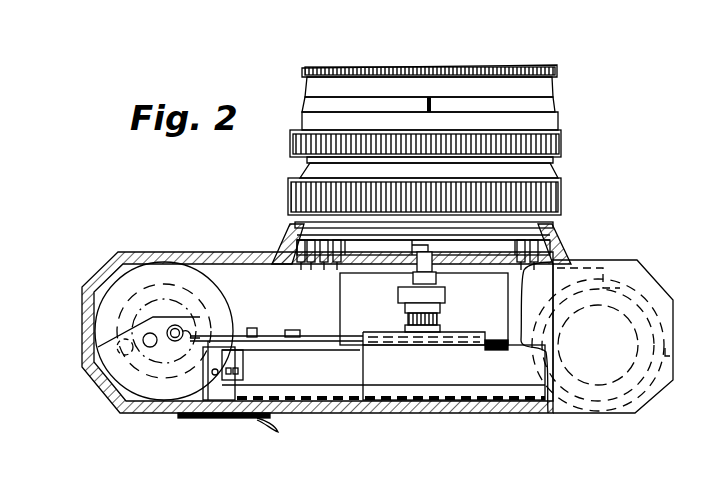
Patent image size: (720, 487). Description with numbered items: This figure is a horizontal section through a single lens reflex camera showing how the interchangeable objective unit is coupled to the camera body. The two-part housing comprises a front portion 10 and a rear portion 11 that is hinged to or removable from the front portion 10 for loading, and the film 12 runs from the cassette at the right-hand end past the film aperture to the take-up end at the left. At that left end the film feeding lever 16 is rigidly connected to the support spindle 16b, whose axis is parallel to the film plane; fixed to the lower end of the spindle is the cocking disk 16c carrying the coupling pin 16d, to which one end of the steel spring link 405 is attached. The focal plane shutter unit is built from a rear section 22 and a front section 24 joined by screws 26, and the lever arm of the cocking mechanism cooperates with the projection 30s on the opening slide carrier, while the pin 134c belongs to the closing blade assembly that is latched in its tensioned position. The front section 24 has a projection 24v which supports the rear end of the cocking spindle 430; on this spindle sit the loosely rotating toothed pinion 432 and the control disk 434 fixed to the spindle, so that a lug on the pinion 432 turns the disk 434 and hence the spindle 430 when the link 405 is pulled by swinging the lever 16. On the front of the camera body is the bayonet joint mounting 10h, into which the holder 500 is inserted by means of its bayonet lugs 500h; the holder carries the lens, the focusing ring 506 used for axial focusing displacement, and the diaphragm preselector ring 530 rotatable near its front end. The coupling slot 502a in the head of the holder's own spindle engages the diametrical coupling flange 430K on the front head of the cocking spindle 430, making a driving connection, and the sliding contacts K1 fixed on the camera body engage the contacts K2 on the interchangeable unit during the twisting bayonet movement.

The front portion of the camera housing 10 is at (165, 252).
The bayonet joint mounting 10h is at (560, 232).
The rear portion of the camera housing 11 is at (100, 392).
The film 12 is at (578, 398).
The film feeding lever 16 is at (258, 424).
The support spindle 16b is at (144, 337).
The cocking disk 16c is at (100, 347).
The coupling pin 16d is at (177, 325).
The rear section of the shutter housing 22 is at (386, 392).
The front section of the shutter housing 24 is at (319, 383).
The projection 24v is at (367, 332).
The screws 26 is at (240, 373).
The projection 30s is at (292, 330).
The pin 134c is at (252, 328).
The link 405 is at (320, 336).
The cocking spindle 430 is at (436, 280).
The coupling flange 430K is at (461, 250).
The toothed pinion 432 is at (438, 318).
The control disk 434 is at (405, 332).
The holder 500 is at (545, 175).
The bayonet lugs 500h is at (283, 240).
The coupling slot 502a is at (411, 248).
The focusing ring 506 is at (561, 140).
The diaphragm preselector ring 530 is at (556, 70).
The fixed contacts K1 is at (311, 248).
The contacts K2 is at (419, 243).